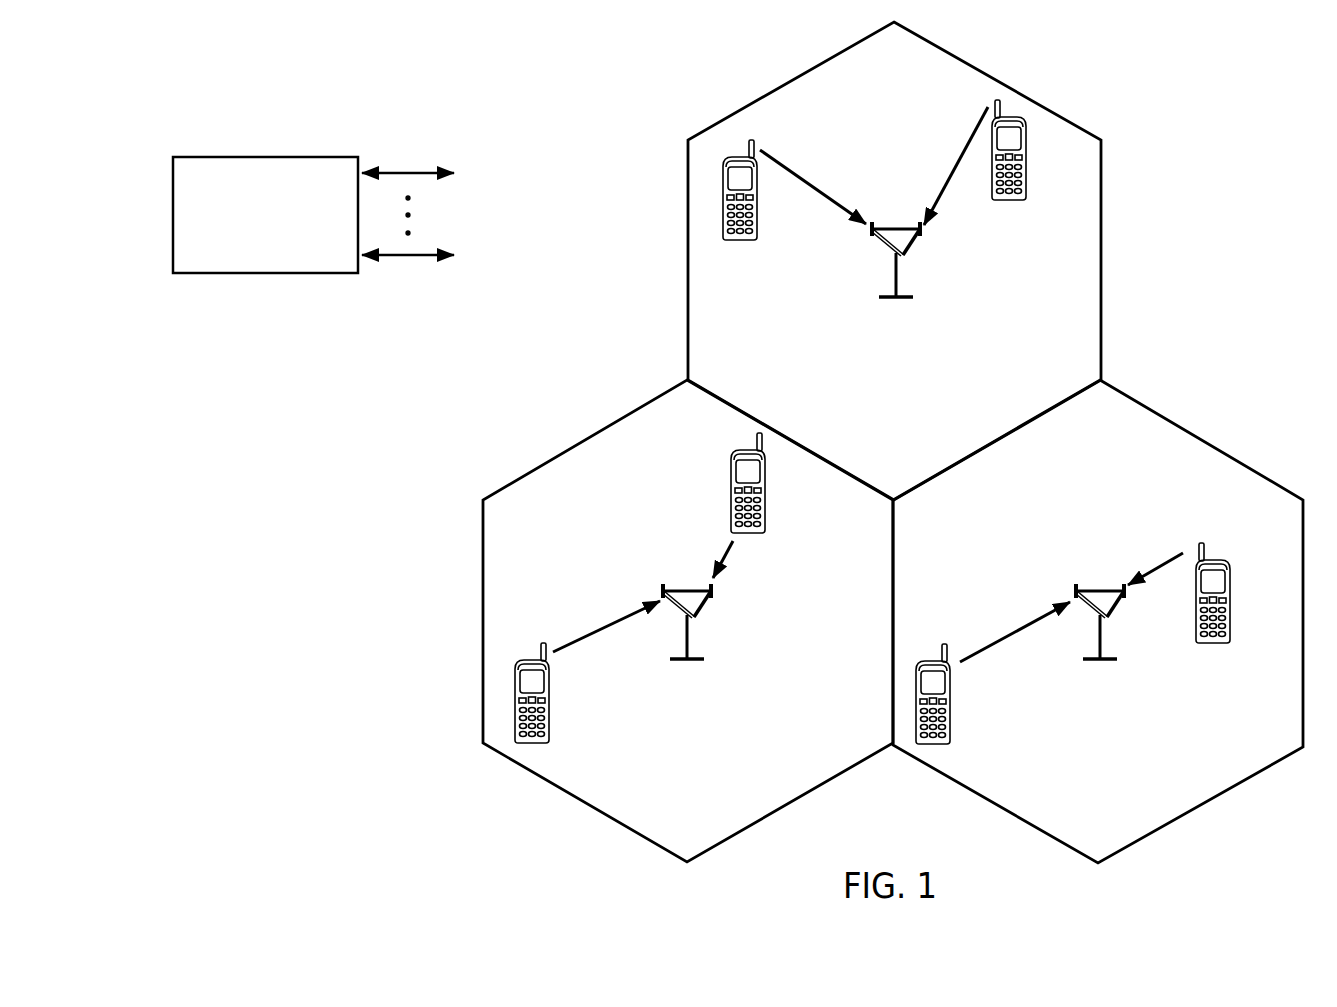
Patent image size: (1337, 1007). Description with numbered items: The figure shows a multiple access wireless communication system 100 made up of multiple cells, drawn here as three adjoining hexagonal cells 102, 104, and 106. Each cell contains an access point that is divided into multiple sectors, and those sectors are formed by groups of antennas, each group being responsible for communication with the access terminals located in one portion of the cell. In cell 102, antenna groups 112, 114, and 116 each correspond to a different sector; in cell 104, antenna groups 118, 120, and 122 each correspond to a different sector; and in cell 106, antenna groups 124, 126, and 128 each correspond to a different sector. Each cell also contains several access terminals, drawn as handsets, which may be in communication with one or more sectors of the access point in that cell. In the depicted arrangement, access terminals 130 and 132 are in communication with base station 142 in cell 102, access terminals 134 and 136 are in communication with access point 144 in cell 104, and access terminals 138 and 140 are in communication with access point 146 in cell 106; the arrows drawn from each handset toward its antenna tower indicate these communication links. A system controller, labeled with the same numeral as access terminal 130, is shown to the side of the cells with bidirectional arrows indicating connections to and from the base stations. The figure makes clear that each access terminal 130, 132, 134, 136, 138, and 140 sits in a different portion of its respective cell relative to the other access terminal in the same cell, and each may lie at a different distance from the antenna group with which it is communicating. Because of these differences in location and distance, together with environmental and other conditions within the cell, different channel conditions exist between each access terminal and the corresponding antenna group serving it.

The multiple access wireless communication system 100 is at (1224, 125).
The cell 102 is at (1212, 447).
The cell 104 is at (580, 438).
The cell 106 is at (931, 43).
The antenna group 112 is at (1075, 592).
The antenna group 114 is at (1108, 618).
The antenna group 116 is at (1125, 595).
The antenna group 118 is at (698, 615).
The antenna group 120 is at (713, 594).
The antenna group 122 is at (662, 592).
The antenna group 124 is at (871, 232).
The antenna group 126 is at (904, 254).
The antenna group 128 is at (921, 233).
The access terminal 130 is at (295, 157).
The access terminal 132 is at (952, 716).
The access terminal 134 is at (733, 468).
The access terminal 136 is at (550, 714).
The access terminal 138 is at (735, 241).
The access terminal 140 is at (1005, 201).
The base station 142 is at (1102, 590).
The access point 144 is at (690, 590).
The access point 146 is at (898, 228).